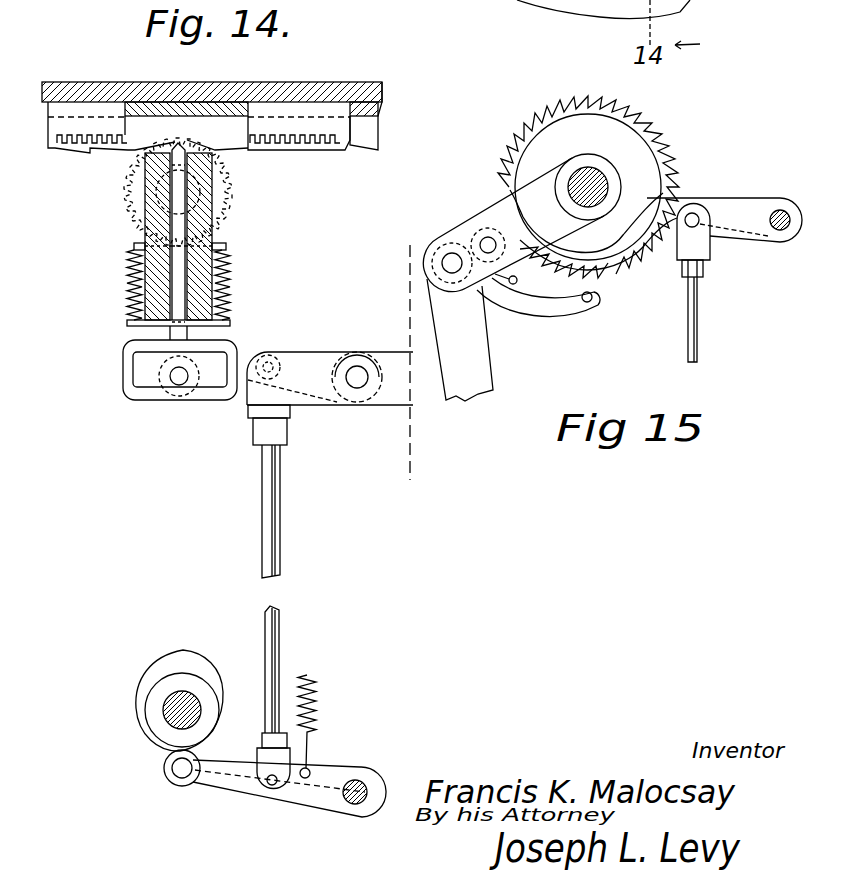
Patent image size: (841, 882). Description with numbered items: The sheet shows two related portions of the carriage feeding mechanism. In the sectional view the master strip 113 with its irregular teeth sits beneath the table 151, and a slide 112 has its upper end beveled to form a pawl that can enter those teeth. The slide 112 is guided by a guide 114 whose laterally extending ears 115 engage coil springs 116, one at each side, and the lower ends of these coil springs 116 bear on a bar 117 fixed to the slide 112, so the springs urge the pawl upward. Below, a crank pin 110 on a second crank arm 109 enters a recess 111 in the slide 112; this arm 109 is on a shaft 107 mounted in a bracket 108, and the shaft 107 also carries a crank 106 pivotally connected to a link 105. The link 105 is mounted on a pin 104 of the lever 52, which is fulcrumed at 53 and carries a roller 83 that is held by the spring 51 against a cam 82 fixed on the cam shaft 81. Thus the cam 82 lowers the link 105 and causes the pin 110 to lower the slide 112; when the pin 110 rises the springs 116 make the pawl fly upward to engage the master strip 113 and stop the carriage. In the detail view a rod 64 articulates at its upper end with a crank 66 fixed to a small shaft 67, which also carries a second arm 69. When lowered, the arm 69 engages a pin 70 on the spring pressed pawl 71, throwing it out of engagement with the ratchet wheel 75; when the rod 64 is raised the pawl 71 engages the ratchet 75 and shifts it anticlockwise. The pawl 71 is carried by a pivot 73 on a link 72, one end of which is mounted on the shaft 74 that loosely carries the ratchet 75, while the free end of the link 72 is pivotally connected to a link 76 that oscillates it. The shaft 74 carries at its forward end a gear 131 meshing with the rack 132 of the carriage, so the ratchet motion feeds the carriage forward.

In FIG. 14, the table 151 is at (318, 77).
In FIG. 14, the rack 132 is at (272, 140).
In FIG. 14, the master strip 113 is at (356, 142).
In FIG. 14, the gear 131 is at (232, 203).
In FIG. 14, the guide 114 is at (148, 240).
In FIG. 14, the ears 115 is at (134, 247).
In FIG. 14, the coil springs 116 is at (129, 280).
In FIG. 14, the bar 117 is at (128, 323).
In FIG. 14, the slide 112 is at (124, 361).
In FIG. 14, the recess 111 is at (147, 380).
In FIG. 14, the crank pin 110 is at (179, 386).
In FIG. 14, the crank 106 is at (308, 354).
In FIG. 14, the shaft 107 is at (357, 389).
In FIG. 14, the bracket 108 is at (395, 406).
In FIG. 14, the second crank arm 109 is at (250, 396).
In FIG. 14, the link 105 is at (263, 566).
In FIG. 14, the cam 82 is at (138, 685).
In FIG. 14, the cam shaft 81 is at (164, 712).
In FIG. 14, the roller 83 is at (183, 785).
In FIG. 14, the lever 52 is at (320, 803).
In FIG. 14, the fulcrum 53 is at (355, 806).
In FIG. 14, the pin 104 is at (272, 787).
In FIG. 14, the spring 51 is at (312, 689).
In FIG. 15, the ratchet wheel 75 is at (662, 160).
In FIG. 15, the shaft 74 is at (590, 178).
In FIG. 15, the link 72 is at (481, 235).
In FIG. 15, the pivot 73 is at (480, 242).
In FIG. 15, the link 76 is at (483, 396).
In FIG. 15, the pawl 71 is at (549, 313).
In FIG. 15, the pin 70 is at (592, 298).
In FIG. 15, the second arm 69 is at (630, 256).
In FIG. 15, the crank 66 is at (750, 203).
In FIG. 15, the shaft 67 is at (777, 233).
In FIG. 15, the rod 64 is at (690, 305).